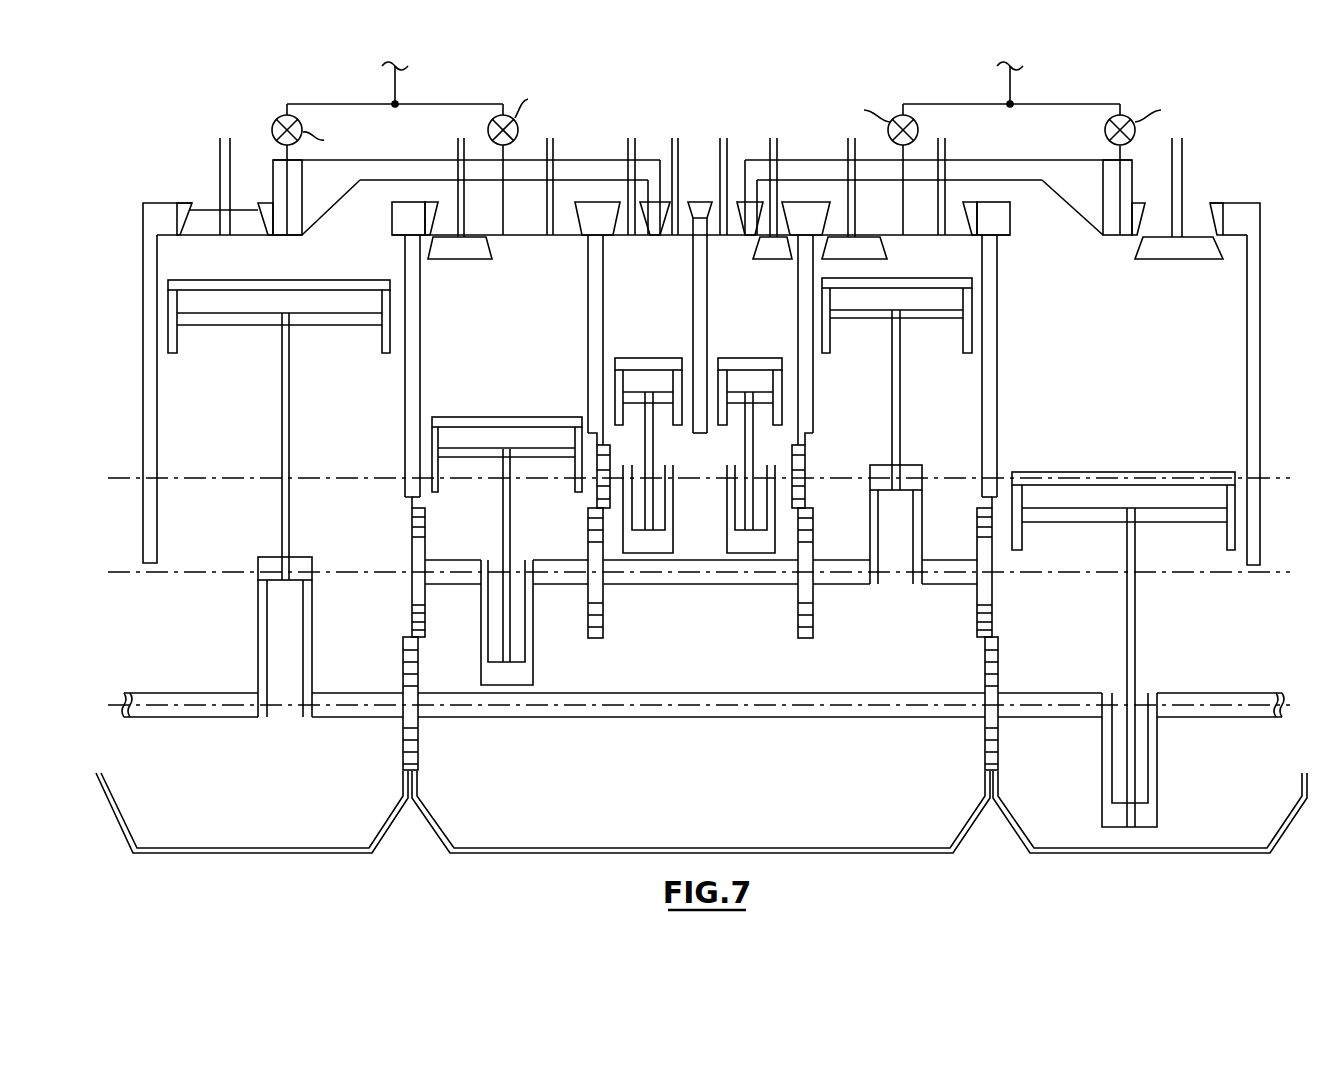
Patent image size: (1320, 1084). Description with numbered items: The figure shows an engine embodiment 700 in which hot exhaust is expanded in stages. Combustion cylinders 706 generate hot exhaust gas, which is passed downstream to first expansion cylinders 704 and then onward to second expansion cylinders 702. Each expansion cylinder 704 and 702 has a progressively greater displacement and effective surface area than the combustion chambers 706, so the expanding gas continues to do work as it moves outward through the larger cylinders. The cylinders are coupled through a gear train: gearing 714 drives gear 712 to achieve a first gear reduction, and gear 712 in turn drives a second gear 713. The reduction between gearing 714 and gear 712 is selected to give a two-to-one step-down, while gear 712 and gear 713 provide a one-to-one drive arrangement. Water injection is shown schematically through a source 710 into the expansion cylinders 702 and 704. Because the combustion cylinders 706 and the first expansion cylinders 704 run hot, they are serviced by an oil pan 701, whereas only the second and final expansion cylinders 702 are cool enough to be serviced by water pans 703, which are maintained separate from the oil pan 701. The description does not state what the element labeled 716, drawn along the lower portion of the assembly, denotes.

The embodiment 700 is at (200, 738).
The oil pan 701 is at (598, 855).
The second expansion cylinders 702 is at (190, 253).
The water pans 703 is at (228, 855).
The first expansion cylinders 704 is at (558, 282).
The combustion cylinders 706 is at (752, 295).
The source 710 is at (397, 86).
The gear 712 is at (412, 597).
The second gear 713 is at (403, 733).
The gearing 714 is at (612, 468).
The drain pipe 716 is at (553, 711).